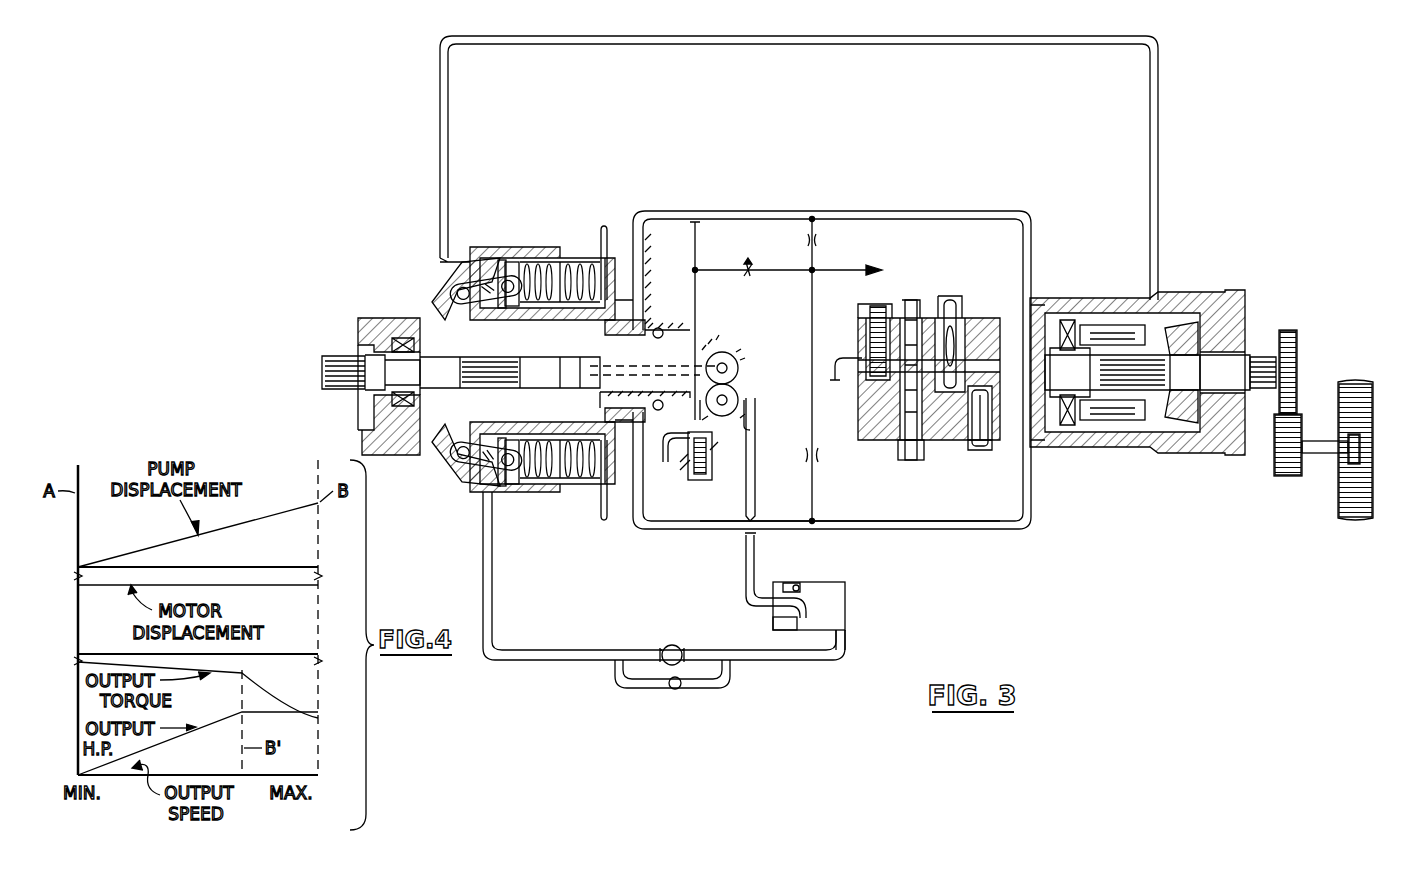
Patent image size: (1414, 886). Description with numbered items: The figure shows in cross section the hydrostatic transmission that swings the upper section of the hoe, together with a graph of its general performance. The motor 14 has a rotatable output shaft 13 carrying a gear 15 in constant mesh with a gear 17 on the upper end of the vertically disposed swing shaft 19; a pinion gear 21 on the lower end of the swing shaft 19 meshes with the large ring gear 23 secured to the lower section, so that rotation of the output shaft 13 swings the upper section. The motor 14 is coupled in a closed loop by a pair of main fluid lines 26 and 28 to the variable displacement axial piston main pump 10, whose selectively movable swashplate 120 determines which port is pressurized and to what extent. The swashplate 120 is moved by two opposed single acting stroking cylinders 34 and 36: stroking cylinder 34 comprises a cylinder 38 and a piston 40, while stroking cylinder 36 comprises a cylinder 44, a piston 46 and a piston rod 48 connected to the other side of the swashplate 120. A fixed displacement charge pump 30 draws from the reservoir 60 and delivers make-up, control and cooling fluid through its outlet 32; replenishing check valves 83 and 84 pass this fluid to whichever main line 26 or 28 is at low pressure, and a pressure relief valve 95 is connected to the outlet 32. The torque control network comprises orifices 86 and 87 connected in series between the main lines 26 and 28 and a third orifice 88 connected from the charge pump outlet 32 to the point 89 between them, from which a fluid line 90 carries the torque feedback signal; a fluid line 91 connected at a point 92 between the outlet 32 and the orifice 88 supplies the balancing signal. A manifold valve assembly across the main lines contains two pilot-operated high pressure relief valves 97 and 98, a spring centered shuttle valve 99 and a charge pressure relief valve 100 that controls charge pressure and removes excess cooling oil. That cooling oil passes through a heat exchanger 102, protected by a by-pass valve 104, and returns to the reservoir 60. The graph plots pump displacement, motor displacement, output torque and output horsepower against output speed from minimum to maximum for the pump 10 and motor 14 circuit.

The main pump 10 is at (500, 244).
The output shaft 13 is at (1262, 355).
The motor 14 is at (1190, 294).
The gear 15 is at (1292, 332).
The gear 17 is at (1280, 477).
The swing shaft 19 is at (1313, 440).
The pinion gear 21 is at (1350, 462).
The ring gear 23 is at (1368, 504).
The main fluid line 26 is at (868, 522).
The main fluid line 28 is at (838, 213).
The charge pump 30 is at (738, 392).
The fluid outlet 32 is at (722, 362).
The stroking cylinder 34 is at (573, 488).
The stroking cylinder 36 is at (573, 252).
The cylinder 38 is at (603, 498).
The piston 40 is at (530, 472).
The cylinder 44 is at (604, 246).
The piston 46 is at (527, 262).
The piston rod 48 is at (475, 284).
The reservoir 60 is at (848, 610).
The replenishing check valve 83 is at (656, 392).
The replenishing check valve 84 is at (667, 316).
The flow control orifice 86 is at (820, 455).
The flow control orifice 87 is at (818, 240).
The flow control orifice 88 is at (748, 262).
The point 89 is at (810, 272).
The fluid line 90 is at (858, 276).
The fluid line 91 is at (692, 247).
The point 92 is at (698, 272).
The pressure relief valve 95 is at (708, 462).
The high pressure relief valve 97 is at (972, 430).
The high pressure relief valve 98 is at (950, 300).
The shuttle valve 99 is at (911, 318).
The charge pressure relief valve 100 is at (876, 322).
The heat exchanger 102 is at (668, 645).
The by-pass valve 104 is at (678, 690).
The swashplate 120 is at (430, 312).